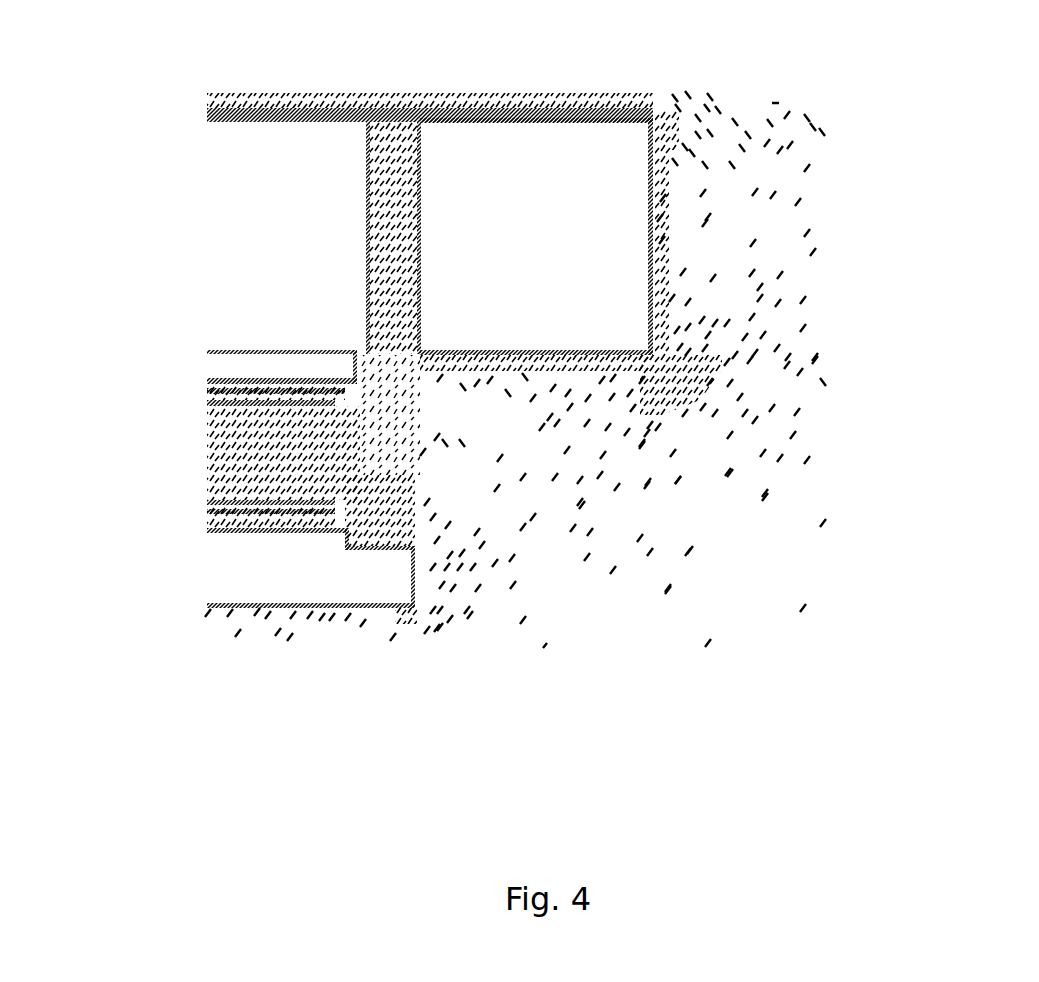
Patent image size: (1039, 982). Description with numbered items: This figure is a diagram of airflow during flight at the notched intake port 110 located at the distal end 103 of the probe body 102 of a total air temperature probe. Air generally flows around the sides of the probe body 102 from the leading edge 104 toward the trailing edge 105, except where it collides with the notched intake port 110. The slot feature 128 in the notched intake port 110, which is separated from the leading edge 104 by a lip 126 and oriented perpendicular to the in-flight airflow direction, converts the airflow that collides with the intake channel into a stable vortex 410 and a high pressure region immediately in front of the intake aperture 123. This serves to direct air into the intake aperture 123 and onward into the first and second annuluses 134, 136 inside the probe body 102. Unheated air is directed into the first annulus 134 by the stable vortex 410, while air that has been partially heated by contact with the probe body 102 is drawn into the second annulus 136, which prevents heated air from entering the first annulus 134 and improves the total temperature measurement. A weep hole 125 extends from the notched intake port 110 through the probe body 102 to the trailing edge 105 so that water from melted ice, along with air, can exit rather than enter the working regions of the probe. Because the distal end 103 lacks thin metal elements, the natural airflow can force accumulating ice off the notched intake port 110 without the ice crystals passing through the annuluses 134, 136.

The probe body 102 is at (305, 240).
The distal end 103 is at (880, 186).
The leading edge 104 is at (222, 608).
The trailing edge 105 is at (233, 110).
The notched intake port 110 is at (728, 537).
The intake aperture 123 is at (360, 432).
The weep hole 125 is at (385, 80).
The lip 126 is at (413, 608).
The slot feature 128 is at (996, 482).
The first annulus 134 is at (228, 446).
The second annulus 136 is at (291, 382).
The stable vortex 410 is at (435, 486).